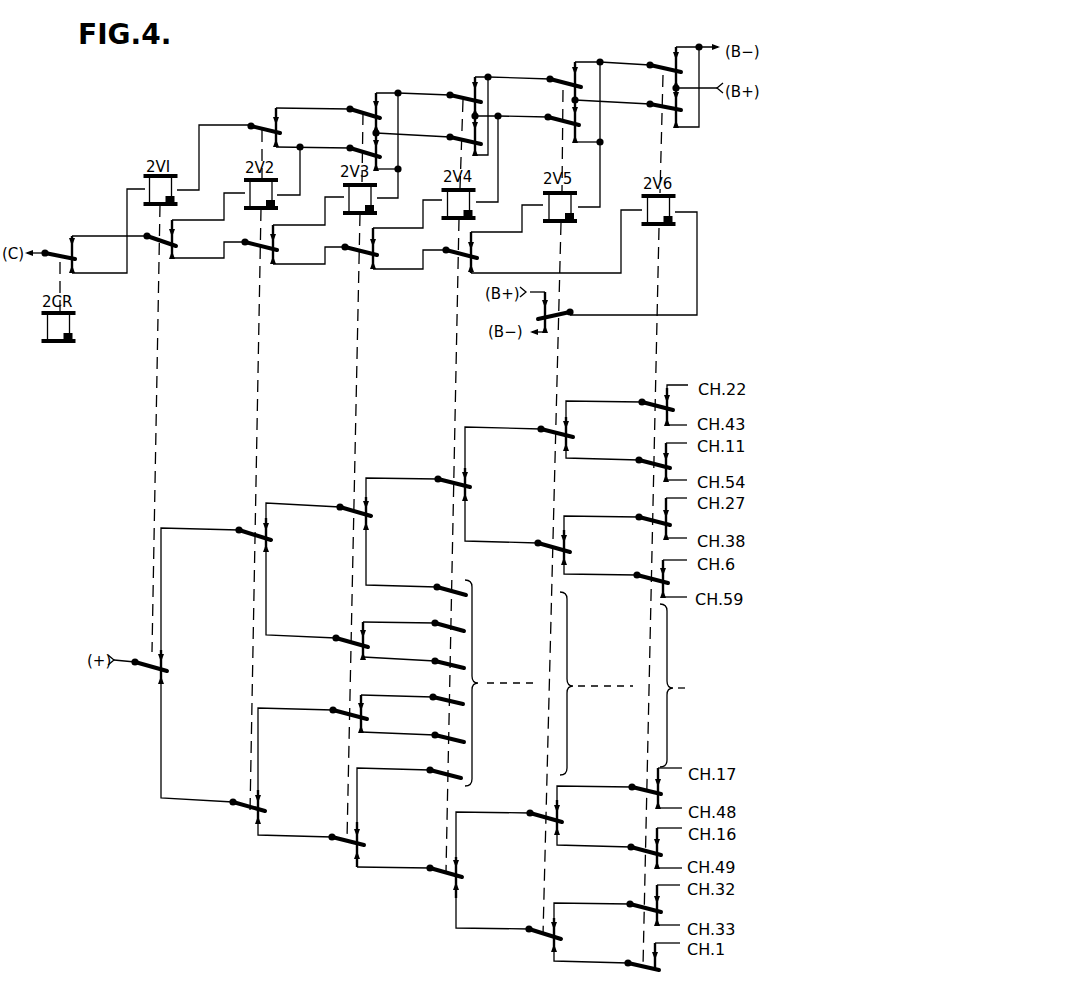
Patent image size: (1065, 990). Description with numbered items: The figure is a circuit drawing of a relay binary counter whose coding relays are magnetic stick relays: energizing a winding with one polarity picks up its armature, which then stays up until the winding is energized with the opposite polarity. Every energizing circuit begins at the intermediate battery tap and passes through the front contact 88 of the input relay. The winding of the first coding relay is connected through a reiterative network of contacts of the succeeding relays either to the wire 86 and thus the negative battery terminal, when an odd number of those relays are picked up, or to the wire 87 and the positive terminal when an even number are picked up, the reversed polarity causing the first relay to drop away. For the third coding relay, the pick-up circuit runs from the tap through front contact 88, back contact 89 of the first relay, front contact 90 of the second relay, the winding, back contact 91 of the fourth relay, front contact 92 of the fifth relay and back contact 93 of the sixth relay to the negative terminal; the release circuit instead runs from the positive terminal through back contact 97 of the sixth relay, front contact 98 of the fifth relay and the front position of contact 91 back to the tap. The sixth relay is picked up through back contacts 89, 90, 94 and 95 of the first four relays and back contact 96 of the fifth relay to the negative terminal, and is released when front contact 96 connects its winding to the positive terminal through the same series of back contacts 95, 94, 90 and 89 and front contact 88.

The wire 86 is at (688, 46).
The wire 87 is at (711, 92).
The front contact of relay 2CR 88 is at (66, 248).
The back contact of relay 2V1 89 is at (159, 243).
The front contact of relay 2V2 90 is at (256, 246).
The back contact of relay 2V4 91 is at (462, 98).
The front contact of relay 2V5 92 is at (562, 121).
The back contact of relay 2V6 93 is at (658, 110).
The back contact of relay 2V3 94 is at (357, 251).
The back contact of relay 2V4 95 is at (455, 254).
The contact of relay 2V5 96 is at (562, 315).
The back contact of relay 2V6 97 is at (662, 63).
The front contact of relay 2V5 98 is at (563, 78).